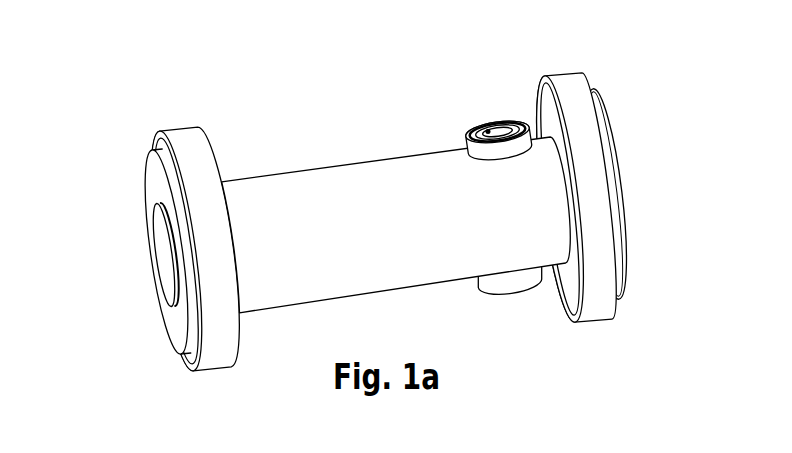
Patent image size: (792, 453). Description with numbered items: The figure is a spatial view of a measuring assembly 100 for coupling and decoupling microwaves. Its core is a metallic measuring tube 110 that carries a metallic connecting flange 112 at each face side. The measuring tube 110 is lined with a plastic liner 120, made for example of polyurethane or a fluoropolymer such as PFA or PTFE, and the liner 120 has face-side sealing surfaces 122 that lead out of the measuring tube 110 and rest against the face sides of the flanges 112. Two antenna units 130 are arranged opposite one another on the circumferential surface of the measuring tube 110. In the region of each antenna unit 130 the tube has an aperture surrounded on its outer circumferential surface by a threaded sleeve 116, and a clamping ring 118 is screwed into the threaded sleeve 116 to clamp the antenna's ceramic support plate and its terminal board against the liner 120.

The measuring assembly 100 is at (185, 80).
The measuring tube 110 is at (418, 162).
The connecting flanges 112 is at (600, 266).
The threaded sleeve 116 is at (517, 283).
The clamping ring 118 is at (478, 122).
The liner 120 is at (163, 244).
The sealing surfaces 122 is at (170, 328).
The antenna units 130 is at (490, 110).